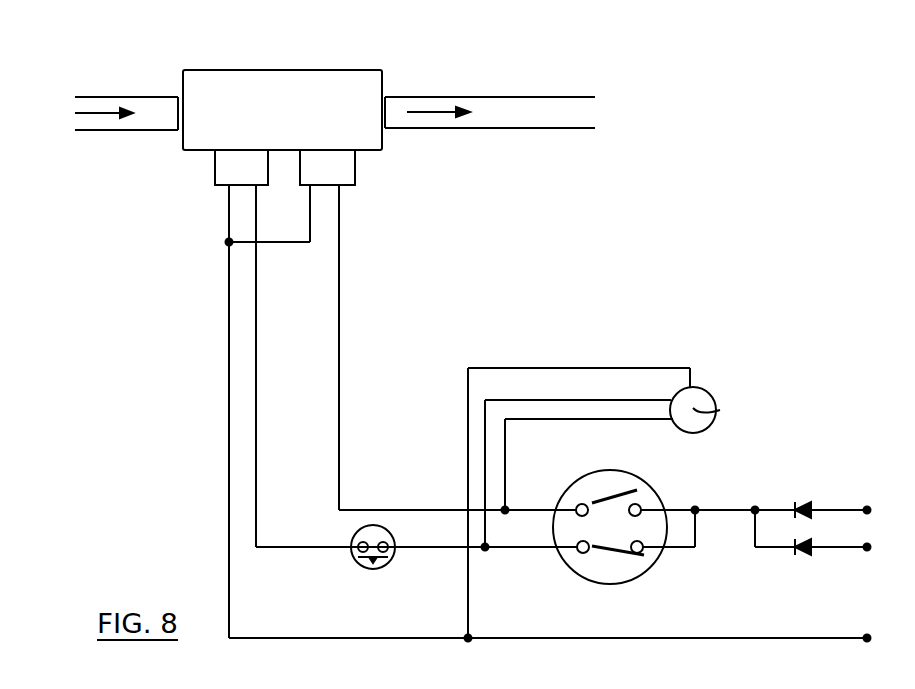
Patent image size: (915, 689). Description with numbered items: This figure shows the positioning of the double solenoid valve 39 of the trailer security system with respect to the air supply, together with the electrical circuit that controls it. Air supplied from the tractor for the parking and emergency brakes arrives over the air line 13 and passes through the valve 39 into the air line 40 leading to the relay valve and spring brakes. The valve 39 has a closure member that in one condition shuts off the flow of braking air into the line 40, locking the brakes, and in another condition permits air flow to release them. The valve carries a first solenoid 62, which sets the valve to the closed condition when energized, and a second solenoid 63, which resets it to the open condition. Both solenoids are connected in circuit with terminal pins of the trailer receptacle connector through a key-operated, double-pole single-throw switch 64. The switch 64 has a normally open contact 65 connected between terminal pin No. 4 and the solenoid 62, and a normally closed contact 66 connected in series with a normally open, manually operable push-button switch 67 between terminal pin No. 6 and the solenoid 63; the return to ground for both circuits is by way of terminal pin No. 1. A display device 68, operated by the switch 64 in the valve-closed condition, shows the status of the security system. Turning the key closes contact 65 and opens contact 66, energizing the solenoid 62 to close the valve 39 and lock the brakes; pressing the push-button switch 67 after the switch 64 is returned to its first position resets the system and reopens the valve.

The air line 13 is at (133, 95).
The double solenoid valve 39 is at (382, 80).
The air line 40 is at (455, 95).
The first solenoid 62 is at (358, 172).
The second solenoid 63 is at (213, 177).
The key-operated double-pole single-throw switch 64 is at (570, 568).
The normally open contact 65 is at (599, 500).
The normally closed contact 66 is at (613, 553).
The push-button switch 67 is at (357, 563).
The display device 68 is at (702, 387).
The terminal pin No. 4 is at (876, 509).
The terminal pin No. 6 is at (876, 546).
The terminal pin No. 1 is at (876, 639).